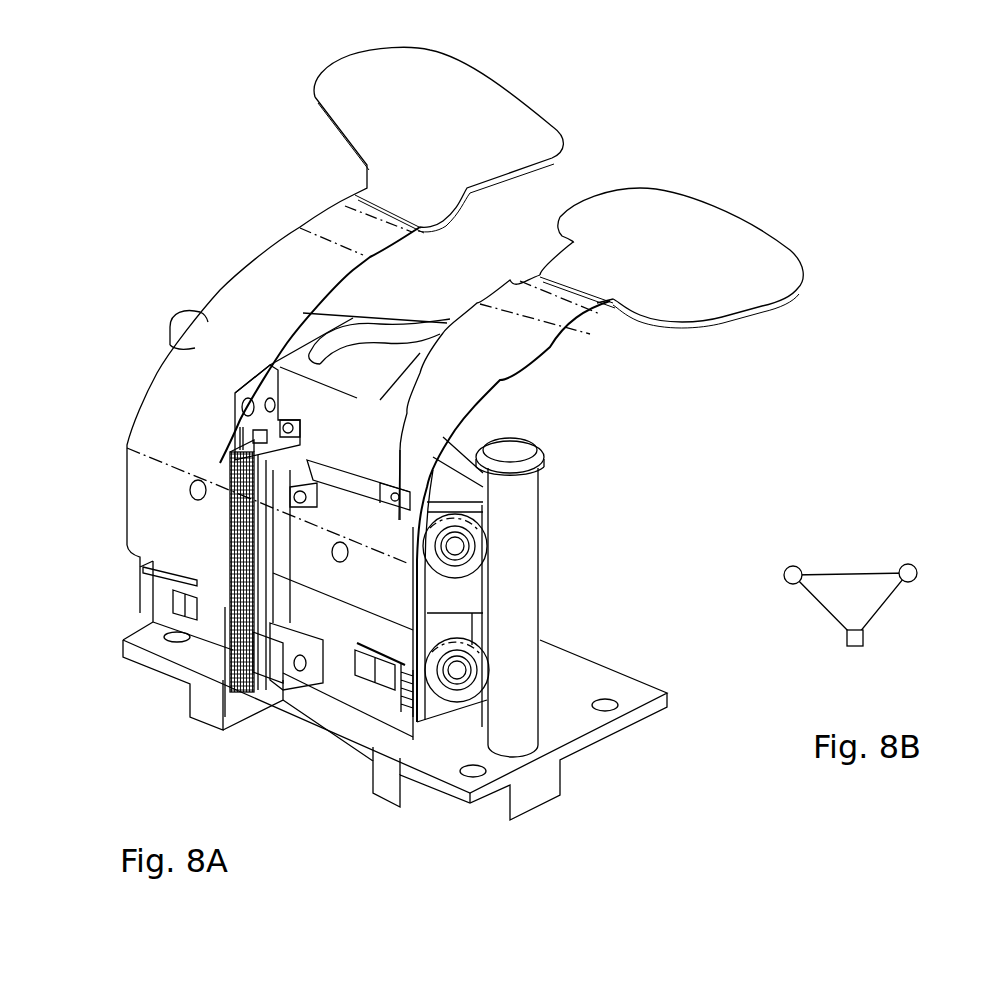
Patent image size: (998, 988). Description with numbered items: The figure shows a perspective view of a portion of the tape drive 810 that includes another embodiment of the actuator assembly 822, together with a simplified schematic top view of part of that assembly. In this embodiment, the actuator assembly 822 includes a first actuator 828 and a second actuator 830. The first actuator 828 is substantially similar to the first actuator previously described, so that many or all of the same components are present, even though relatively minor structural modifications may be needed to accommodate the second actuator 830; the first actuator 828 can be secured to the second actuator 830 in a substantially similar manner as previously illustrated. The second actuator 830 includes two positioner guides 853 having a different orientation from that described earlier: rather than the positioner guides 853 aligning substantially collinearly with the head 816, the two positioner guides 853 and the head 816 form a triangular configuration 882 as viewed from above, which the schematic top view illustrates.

In FIG. 8A, the tape drive 810 is at (465, 384).
In FIG. 8A, the head 816 is at (235, 540).
In FIG. 8B, the head 816 is at (858, 634).
In FIG. 8A, the actuator assembly 822 is at (568, 448).
In FIG. 8A, the first actuator 828 is at (310, 460).
In FIG. 8A, the second actuator 830 is at (514, 405).
In FIG. 8A, the positioner guides 853 is at (188, 322).
In FIG. 8B, the positioner guides 853 is at (800, 578).
In FIG. 8B, the triangular configuration 882 is at (850, 570).